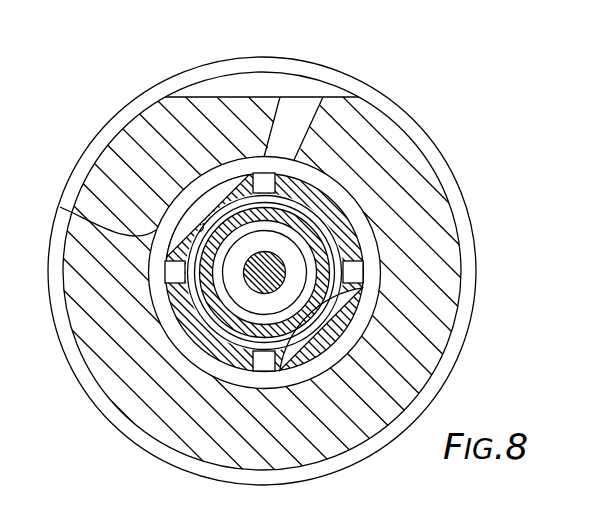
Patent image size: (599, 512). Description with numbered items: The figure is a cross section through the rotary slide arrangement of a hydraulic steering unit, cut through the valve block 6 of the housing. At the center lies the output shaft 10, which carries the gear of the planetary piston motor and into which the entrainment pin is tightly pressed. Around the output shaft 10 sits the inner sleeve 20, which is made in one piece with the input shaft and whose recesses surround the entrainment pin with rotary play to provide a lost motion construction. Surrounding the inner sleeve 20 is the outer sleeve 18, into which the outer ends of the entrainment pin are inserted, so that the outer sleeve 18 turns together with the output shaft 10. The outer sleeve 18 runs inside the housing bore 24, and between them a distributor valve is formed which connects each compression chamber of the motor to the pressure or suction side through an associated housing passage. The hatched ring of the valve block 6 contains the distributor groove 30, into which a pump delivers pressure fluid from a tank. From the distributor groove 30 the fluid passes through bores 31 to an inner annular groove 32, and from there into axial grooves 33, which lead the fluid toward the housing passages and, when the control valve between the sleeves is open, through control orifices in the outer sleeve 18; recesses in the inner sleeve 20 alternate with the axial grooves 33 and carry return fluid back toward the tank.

The valve block 6 is at (433, 138).
The output shaft 10 is at (249, 284).
The outer sleeve 18 is at (300, 183).
The inner sleeve 20 is at (358, 210).
The housing bore 24 is at (60, 207).
The distributor groove 30 is at (361, 235).
The bores 31 is at (352, 270).
The inner annular groove 32 is at (332, 298).
The axial grooves 33 is at (160, 217).